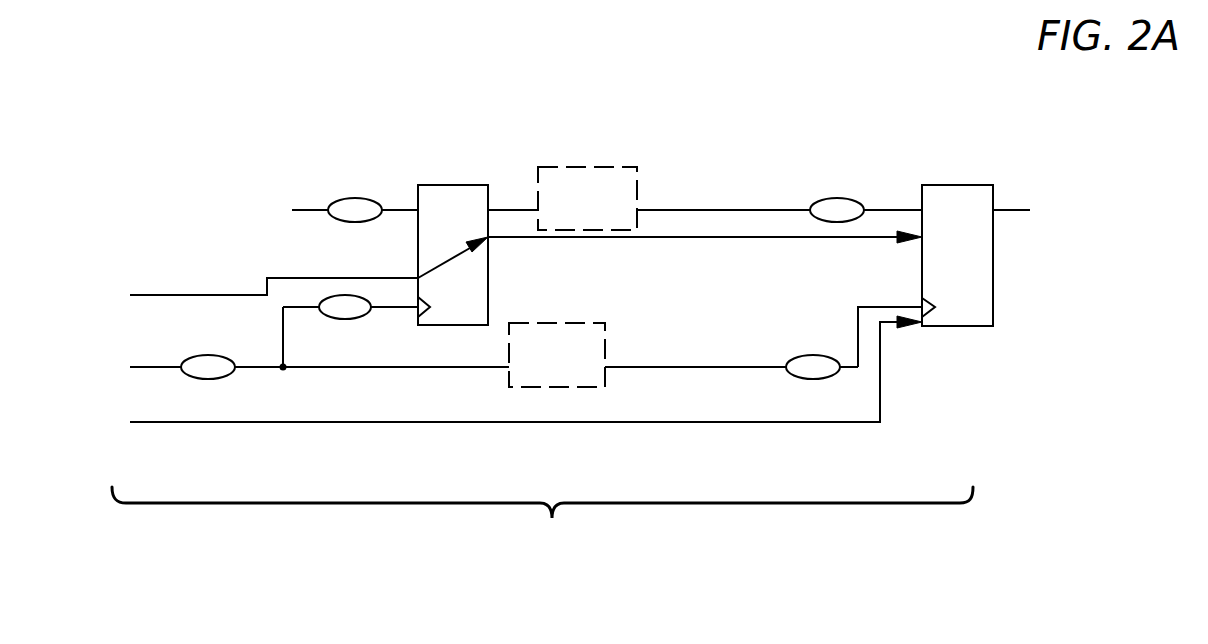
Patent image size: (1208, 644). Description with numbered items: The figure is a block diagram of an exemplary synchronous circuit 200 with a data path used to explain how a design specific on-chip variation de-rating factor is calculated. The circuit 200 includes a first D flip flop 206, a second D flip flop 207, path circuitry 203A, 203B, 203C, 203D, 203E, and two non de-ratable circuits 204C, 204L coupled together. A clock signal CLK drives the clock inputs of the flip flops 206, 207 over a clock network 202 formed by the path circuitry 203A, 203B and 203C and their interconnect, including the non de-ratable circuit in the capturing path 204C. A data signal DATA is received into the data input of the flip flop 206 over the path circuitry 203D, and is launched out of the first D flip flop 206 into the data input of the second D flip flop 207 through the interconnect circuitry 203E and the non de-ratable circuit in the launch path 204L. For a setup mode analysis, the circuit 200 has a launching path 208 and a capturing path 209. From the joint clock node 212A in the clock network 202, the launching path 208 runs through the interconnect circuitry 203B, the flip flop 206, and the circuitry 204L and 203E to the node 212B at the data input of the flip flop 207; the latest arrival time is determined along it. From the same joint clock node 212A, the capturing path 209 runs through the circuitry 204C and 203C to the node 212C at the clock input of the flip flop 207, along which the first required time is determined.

The circuit 200 is at (227, 162).
The clock network 202 is at (542, 535).
The path circuitry 203A is at (208, 355).
The interconnect circuitry 203B is at (342, 320).
The interconnect circuitry 203C is at (813, 380).
The path circuitry 203D is at (355, 197).
The interconnect circuitry 203E is at (837, 197).
The non de-ratable circuit in launch path 204L is at (603, 167).
The non de-ratable circuit in capturing path 204C is at (572, 323).
The first D flip flop 206 is at (455, 185).
The second D flip flop 207 is at (957, 185).
The launching path 208 is at (325, 278).
The capturing path 209 is at (235, 423).
The joint clock node 212A is at (283, 371).
The node 212B is at (895, 209).
The node 212C is at (908, 307).